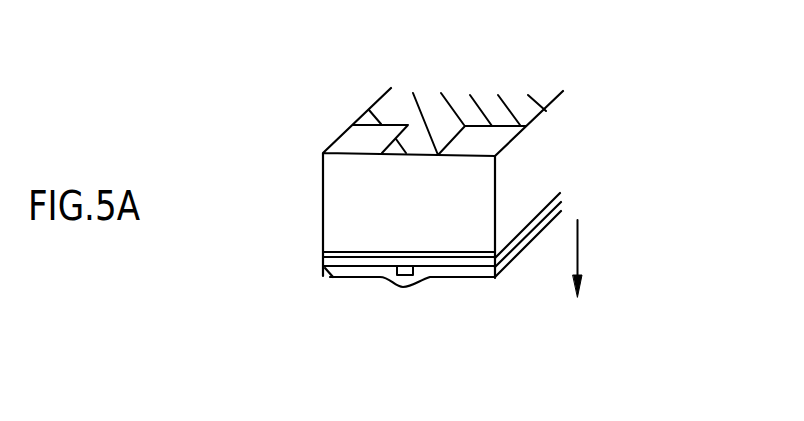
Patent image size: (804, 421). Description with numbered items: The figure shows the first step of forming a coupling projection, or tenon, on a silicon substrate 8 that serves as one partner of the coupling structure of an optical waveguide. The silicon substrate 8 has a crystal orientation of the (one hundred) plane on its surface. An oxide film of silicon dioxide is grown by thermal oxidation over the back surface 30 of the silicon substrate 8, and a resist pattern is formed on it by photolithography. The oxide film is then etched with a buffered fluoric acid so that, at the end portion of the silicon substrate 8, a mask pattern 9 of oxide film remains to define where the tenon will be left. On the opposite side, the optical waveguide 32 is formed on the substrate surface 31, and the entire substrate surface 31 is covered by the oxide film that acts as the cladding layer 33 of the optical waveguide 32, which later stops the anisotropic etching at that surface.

The back surface 30 is at (333, 147).
The mask pattern 9 is at (470, 95).
The silicon substrate 8 is at (513, 183).
The substrate surface 31 is at (325, 276).
The optical waveguide 32 is at (417, 273).
The cladding layer 33 is at (343, 277).